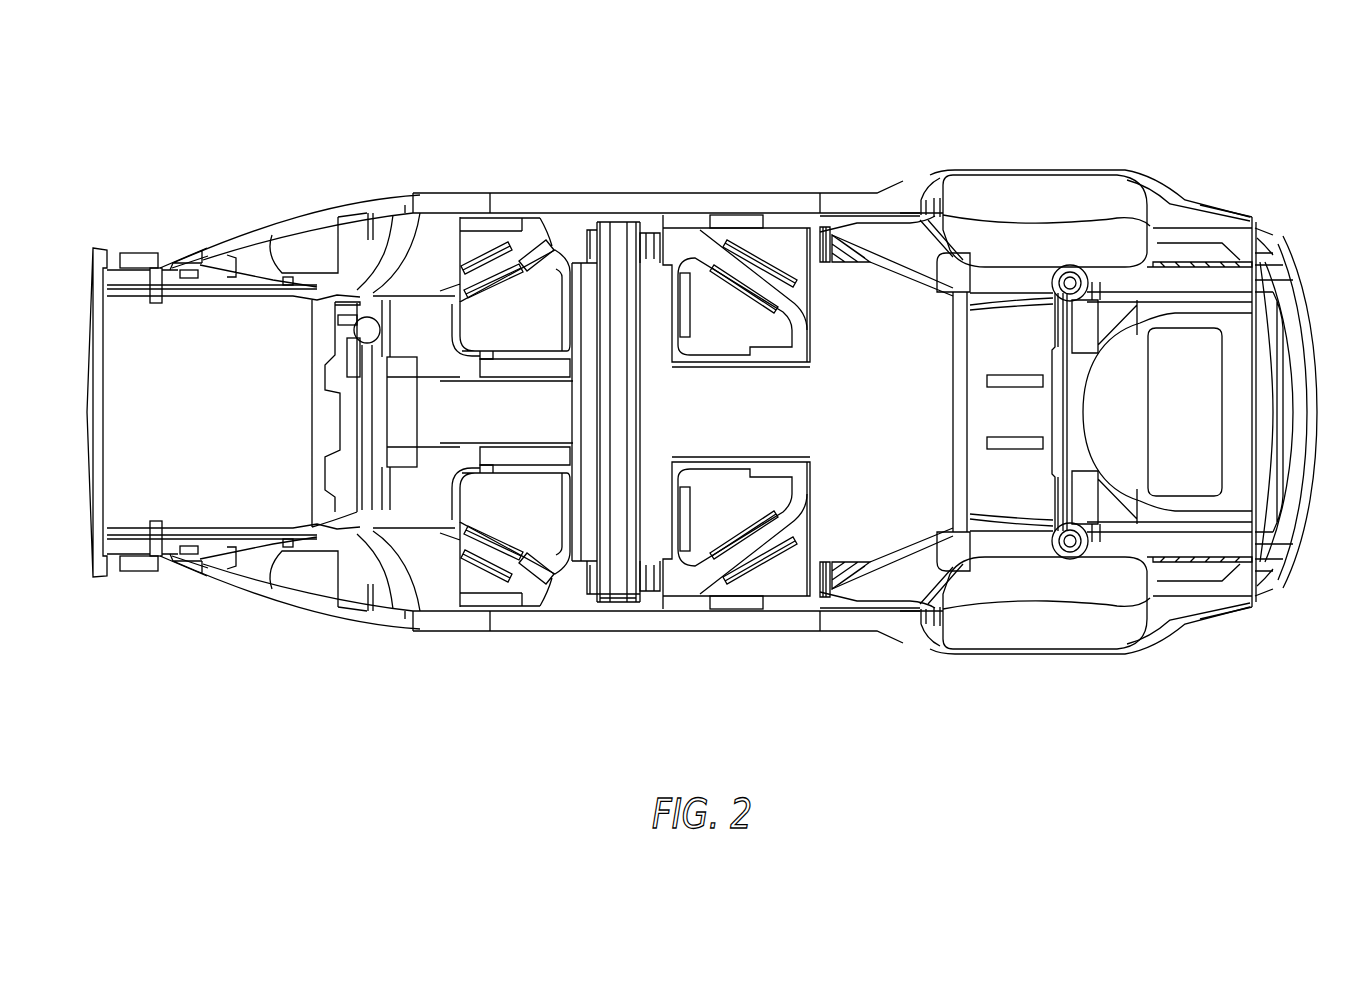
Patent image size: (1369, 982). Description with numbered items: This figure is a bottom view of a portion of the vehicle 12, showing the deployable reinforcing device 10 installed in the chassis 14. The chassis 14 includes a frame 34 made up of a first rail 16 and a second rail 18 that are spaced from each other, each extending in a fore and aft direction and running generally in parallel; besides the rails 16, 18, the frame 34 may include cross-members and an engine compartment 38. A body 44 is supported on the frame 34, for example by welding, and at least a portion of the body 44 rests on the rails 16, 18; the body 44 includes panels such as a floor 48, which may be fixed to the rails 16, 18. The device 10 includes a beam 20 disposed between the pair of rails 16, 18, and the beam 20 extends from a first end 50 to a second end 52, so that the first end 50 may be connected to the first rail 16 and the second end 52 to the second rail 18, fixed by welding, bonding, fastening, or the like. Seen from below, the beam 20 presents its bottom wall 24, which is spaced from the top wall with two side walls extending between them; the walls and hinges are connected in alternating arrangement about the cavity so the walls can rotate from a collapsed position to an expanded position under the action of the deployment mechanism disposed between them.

The deployable reinforcing device 10 is at (590, 568).
The vehicle 12 is at (833, 96).
The chassis 14 is at (425, 650).
The first rail 16 is at (731, 205).
The second rail 18 is at (712, 620).
The beam 20 is at (606, 572).
The bottom wall 24 is at (618, 402).
The frame 34 is at (785, 634).
The engine compartment 38 is at (177, 472).
The body 44 is at (1043, 170).
The floor 48 is at (890, 418).
The first end 50 is at (615, 215).
The second end 52 is at (620, 600).